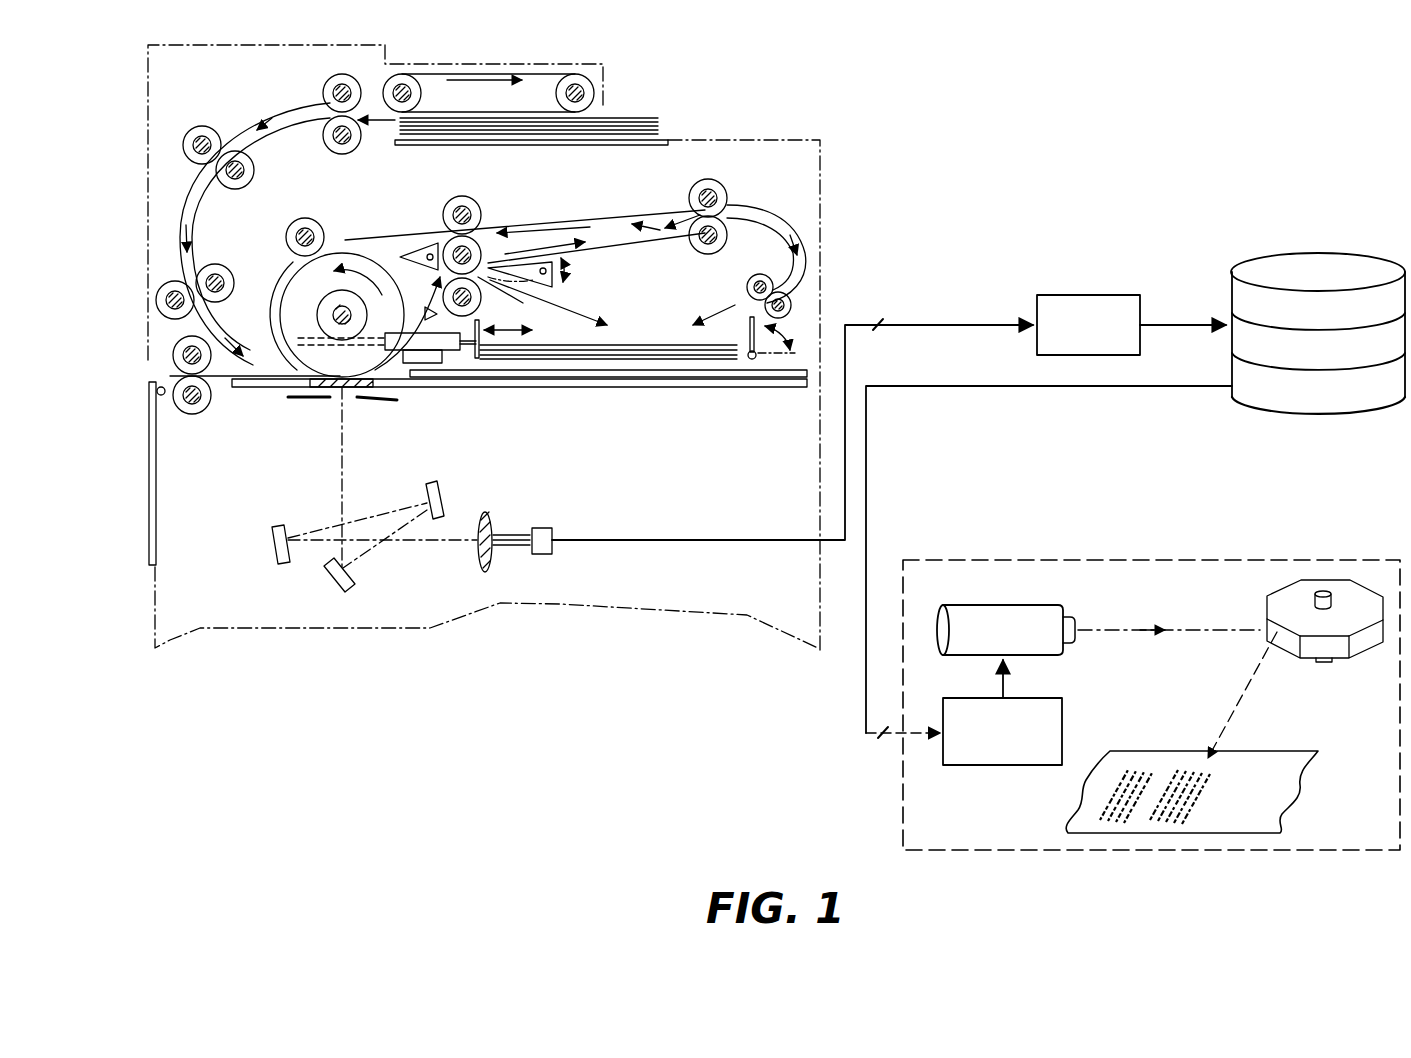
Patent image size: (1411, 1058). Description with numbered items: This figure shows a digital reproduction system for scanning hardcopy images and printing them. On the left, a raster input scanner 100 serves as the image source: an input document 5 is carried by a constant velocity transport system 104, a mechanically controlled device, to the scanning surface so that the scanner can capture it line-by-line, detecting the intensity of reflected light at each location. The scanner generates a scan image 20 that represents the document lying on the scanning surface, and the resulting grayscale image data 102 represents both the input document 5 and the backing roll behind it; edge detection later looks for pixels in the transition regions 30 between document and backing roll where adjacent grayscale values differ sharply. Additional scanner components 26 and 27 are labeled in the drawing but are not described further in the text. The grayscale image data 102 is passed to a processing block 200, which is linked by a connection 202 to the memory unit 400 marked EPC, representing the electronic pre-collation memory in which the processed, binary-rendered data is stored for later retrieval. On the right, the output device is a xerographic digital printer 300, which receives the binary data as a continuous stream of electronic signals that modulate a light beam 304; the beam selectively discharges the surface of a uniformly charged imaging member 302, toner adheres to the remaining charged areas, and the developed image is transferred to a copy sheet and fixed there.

The input document 5 is at (648, 117).
The scan image 20 is at (320, 293).
The photoreceptor drum path arc 26 is at (275, 300).
The sheet feed roller 27 is at (168, 302).
The transition regions 30 is at (343, 387).
The raster input scanner 100 is at (480, 488).
The grayscale image data 102 is at (648, 543).
The constant velocity transport system 104 is at (744, 207).
The controller 200 is at (1088, 325).
The data link 202 is at (1152, 327).
The xerographic digital printer 300 is at (1151, 689).
The imaging member 302 is at (1290, 818).
The light beam 304 is at (1240, 712).
The EPC database 400 is at (1306, 240).